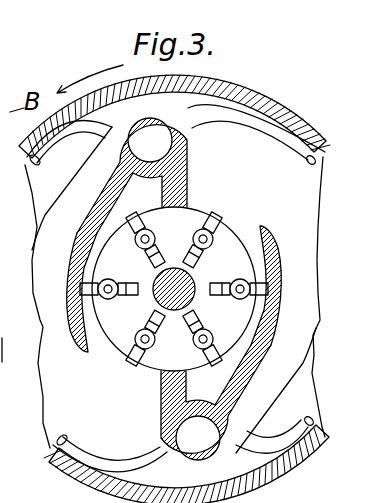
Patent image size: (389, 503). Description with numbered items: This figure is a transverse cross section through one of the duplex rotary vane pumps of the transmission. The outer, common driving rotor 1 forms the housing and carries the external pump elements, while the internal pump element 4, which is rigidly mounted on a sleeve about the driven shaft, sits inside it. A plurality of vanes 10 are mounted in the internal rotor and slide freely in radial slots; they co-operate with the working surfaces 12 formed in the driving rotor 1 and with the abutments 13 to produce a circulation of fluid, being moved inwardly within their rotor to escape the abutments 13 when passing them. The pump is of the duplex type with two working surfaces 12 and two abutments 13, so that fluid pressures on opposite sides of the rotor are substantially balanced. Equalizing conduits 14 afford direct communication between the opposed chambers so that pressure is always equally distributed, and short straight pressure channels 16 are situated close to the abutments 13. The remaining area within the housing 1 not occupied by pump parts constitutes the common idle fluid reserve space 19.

The rotor 1 is at (227, 82).
The pump element 4 is at (174, 289).
The vanes 10 is at (203, 216).
The working surfaces 12 is at (78, 243).
The abutments 13 is at (187, 162).
The conduits 14 is at (115, 462).
The pressure channels 16 is at (158, 130).
The idle fluid reserve space 19 is at (92, 123).